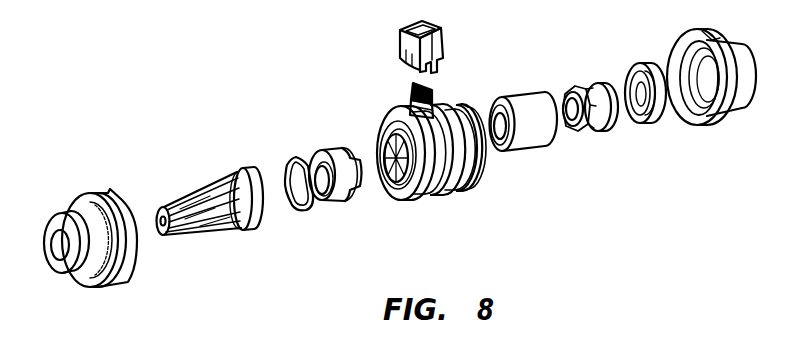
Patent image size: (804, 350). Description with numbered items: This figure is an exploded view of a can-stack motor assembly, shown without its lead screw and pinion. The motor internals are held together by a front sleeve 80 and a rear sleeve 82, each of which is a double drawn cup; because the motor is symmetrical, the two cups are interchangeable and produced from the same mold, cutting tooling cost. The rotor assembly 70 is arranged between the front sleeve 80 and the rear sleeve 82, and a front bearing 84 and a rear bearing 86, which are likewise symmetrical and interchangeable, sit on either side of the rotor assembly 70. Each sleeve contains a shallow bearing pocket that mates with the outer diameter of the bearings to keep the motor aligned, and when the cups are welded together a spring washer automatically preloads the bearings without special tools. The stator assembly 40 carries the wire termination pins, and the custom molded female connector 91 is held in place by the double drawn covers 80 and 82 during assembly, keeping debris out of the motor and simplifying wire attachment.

The front sleeve 80 is at (92, 190).
The front bearing 84 is at (342, 193).
The stator assembly 40 is at (447, 203).
The connector 91 is at (400, 45).
The rotor assembly 70 is at (507, 98).
The rear bearing 86 is at (605, 125).
The rear sleeve 82 is at (723, 118).